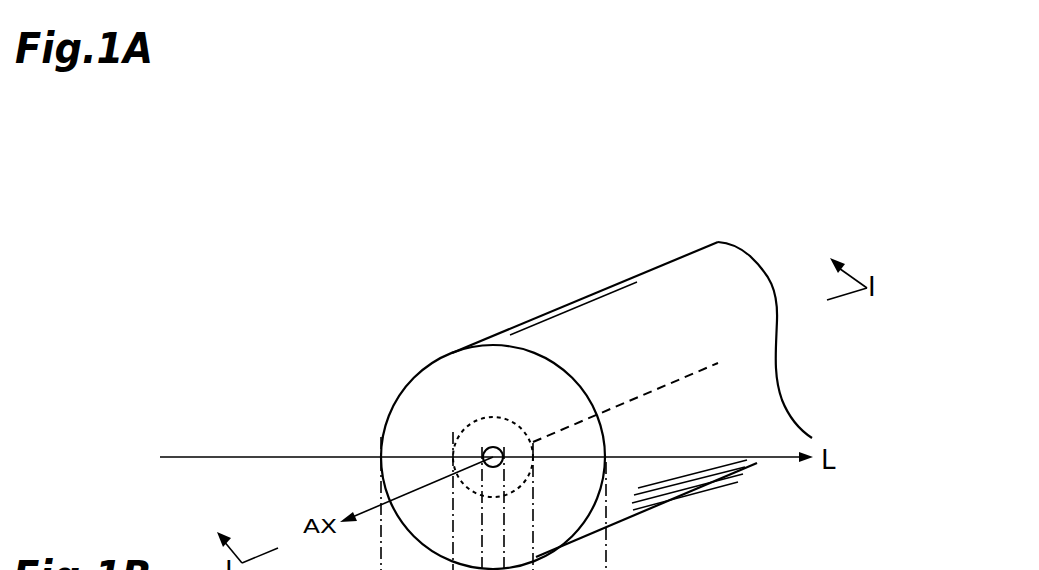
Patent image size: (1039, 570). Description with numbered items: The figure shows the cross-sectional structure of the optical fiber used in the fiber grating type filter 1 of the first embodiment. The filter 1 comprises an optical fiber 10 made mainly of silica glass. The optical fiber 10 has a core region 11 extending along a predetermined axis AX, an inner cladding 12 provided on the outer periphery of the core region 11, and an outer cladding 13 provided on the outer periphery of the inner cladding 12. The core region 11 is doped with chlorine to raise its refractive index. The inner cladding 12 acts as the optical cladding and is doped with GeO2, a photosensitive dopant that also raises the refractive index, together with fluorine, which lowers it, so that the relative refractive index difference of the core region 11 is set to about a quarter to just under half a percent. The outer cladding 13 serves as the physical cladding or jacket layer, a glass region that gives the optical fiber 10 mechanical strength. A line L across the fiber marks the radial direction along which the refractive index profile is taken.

The fiber grating type filter 1 is at (675, 285).
The optical fiber 10 is at (350, 348).
The core region 11 is at (490, 452).
The inner cladding 12 is at (497, 423).
The outer cladding 13 is at (482, 367).